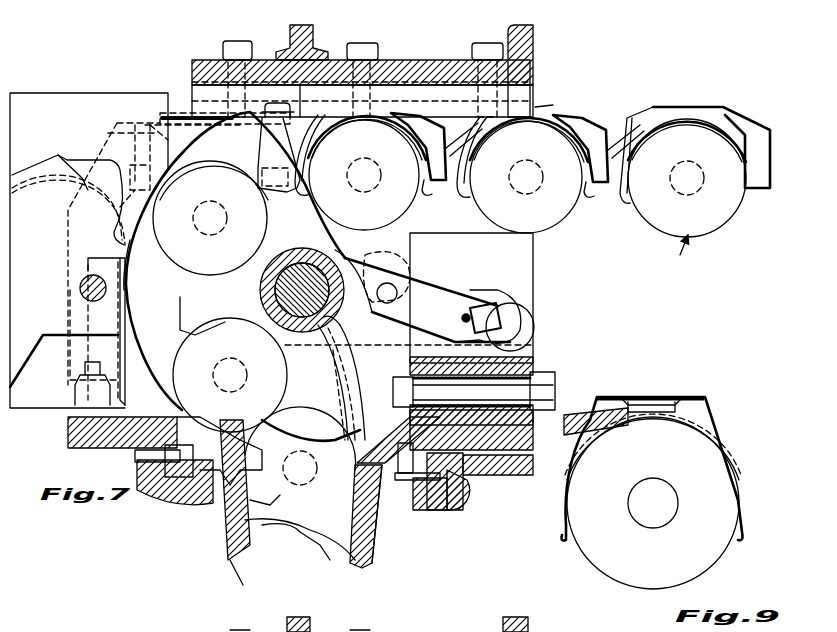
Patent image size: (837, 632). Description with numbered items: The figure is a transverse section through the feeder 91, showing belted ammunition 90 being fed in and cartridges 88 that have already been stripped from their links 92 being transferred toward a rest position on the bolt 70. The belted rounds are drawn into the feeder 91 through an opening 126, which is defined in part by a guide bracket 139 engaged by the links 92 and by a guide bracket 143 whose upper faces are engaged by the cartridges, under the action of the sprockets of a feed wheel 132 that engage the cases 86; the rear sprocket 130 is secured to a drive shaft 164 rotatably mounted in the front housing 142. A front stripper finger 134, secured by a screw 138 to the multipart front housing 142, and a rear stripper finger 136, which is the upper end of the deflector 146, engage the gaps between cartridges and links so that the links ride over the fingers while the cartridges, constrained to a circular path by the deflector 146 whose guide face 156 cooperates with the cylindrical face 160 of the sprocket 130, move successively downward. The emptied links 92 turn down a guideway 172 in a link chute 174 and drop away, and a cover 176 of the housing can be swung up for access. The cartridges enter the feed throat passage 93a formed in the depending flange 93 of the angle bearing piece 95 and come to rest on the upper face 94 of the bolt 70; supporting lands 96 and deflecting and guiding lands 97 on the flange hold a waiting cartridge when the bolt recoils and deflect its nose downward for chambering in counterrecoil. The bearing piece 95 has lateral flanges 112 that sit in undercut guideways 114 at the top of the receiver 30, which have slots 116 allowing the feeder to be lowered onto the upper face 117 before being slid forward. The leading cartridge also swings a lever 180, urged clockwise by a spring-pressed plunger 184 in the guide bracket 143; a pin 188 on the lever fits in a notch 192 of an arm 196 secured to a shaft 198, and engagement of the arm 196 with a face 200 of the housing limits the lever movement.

In FIG. 7, the receiver 30 is at (468, 490).
In FIG. 7, the bolt 70 is at (232, 570).
In FIG. 7, the case 86 is at (575, 212).
In FIG. 9, the case 86 is at (578, 558).
In FIG. 7, the cartridge 88 is at (222, 556).
In FIG. 9, the cartridge 88 is at (608, 590).
In FIG. 7, the belted ammunition 90 is at (585, 108).
In FIG. 9, the belted ammunition 90 is at (665, 385).
In FIG. 7, the feeder 91 is at (390, 34).
In FIG. 7, the link 92 is at (600, 135).
In FIG. 9, the link 92 is at (722, 420).
In FIG. 7, the depending flange 93 is at (375, 555).
In FIG. 7, the feed throat passage 93a is at (375, 540).
In FIG. 7, the upper face 94 is at (298, 520).
In FIG. 7, the angle bearing piece 95 is at (220, 505).
In FIG. 7, the cartridge supporting lands 96 is at (258, 536).
In FIG. 7, the cartridge deflecting and guiding lands 97 is at (335, 515).
In FIG. 7, the lateral flange 112 is at (165, 505).
In FIG. 7, the undercut guideways 114 is at (138, 456).
In FIG. 7, the laterally extending slots 116 is at (468, 468).
In FIG. 7, the upper face 117 is at (420, 505).
In FIG. 7, the opening 126 is at (452, 118).
In FIG. 7, the rear sprocket 130 is at (218, 313).
In FIG. 7, the feed wheel 132 is at (158, 330).
In FIG. 7, the front stripper finger 134 is at (305, 100).
In FIG. 7, the rear stripper finger 136 is at (277, 103).
In FIG. 9, the rear stripper finger 136 is at (623, 402).
In FIG. 7, the screw 138 is at (237, 41).
In FIG. 7, the guide bracket 139 is at (530, 100).
In FIG. 7, the front housing 142 is at (535, 40).
In FIG. 7, the guide bracket 143 is at (533, 252).
In FIG. 7, the deflector 146 is at (203, 146).
In FIG. 9, the deflector 146 is at (570, 437).
In FIG. 7, the guide face 156 is at (135, 262).
In FIG. 7, the cylindrical face 160 is at (268, 226).
In FIG. 7, the drive shaft 164 is at (262, 283).
In FIG. 7, the guideway 172 is at (122, 254).
In FIG. 7, the link chute 174 is at (28, 91).
In FIG. 7, the cover 176 is at (405, 62).
In FIG. 7, the lever 180 is at (345, 428).
In FIG. 7, the spring-pressed plunger 184 is at (412, 375).
In FIG. 7, the pin 188 is at (395, 285).
In FIG. 7, the notch 192 is at (372, 263).
In FIG. 7, the arm 196 is at (440, 292).
In FIG. 7, the shaft 198 is at (503, 306).
In FIG. 7, the face 200 is at (422, 338).